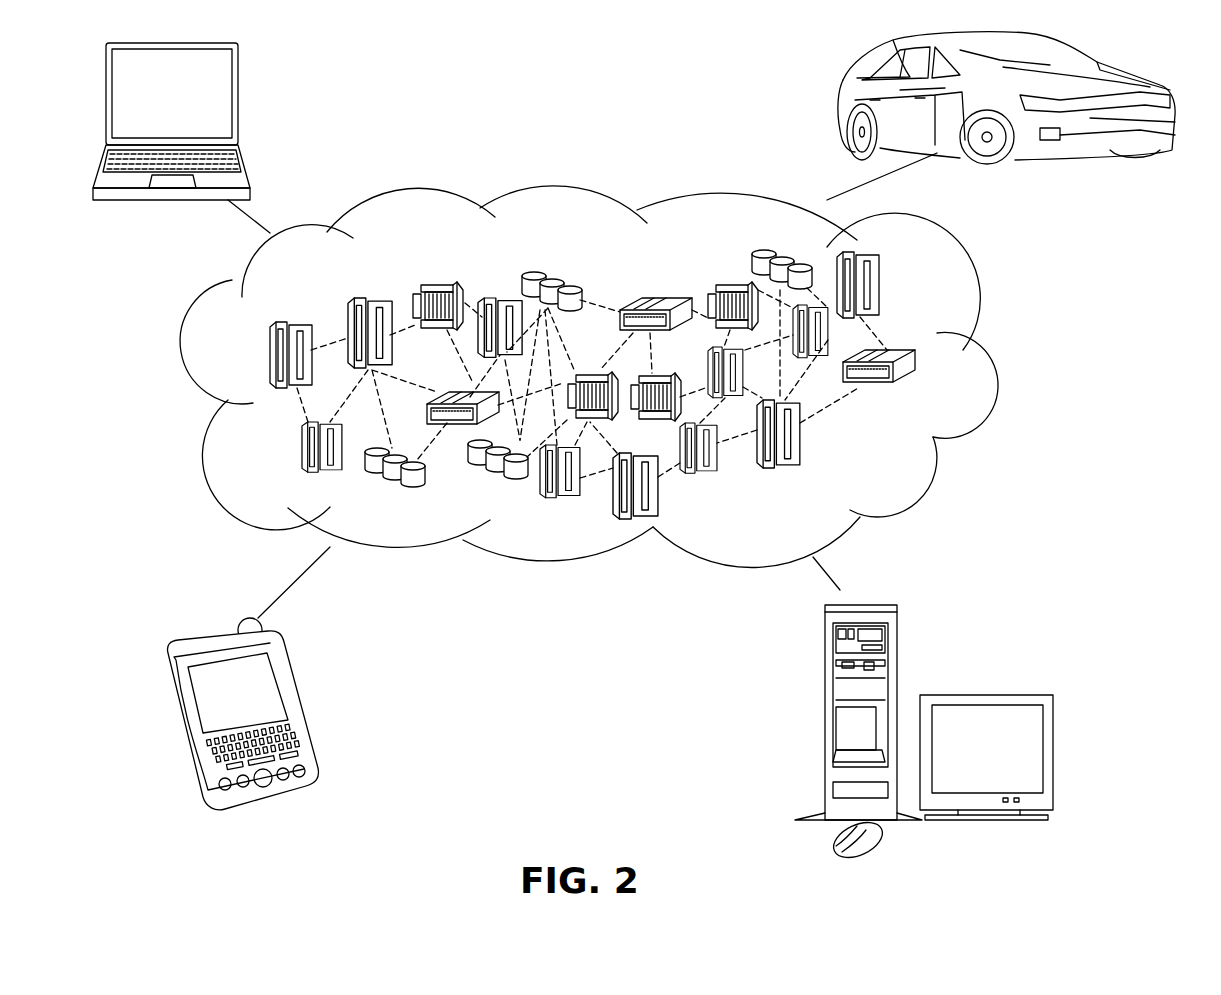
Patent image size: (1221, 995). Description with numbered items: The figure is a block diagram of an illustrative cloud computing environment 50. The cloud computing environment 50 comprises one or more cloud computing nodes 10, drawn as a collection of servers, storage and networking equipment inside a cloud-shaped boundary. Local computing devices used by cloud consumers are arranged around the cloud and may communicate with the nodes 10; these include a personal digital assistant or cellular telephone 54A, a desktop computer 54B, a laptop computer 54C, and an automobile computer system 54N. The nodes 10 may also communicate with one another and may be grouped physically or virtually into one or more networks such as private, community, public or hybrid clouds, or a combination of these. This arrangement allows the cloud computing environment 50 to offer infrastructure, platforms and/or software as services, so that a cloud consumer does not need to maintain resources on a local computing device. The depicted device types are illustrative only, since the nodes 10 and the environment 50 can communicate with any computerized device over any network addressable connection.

The cloud computing node 10 is at (895, 462).
The cloud computing environment 50 is at (986, 365).
The personal digital assistant (PDA) or cellular telephone 54A is at (292, 675).
The desktop computer 54B is at (823, 660).
The laptop computer 54C is at (238, 78).
The automobile computer system 54N is at (840, 95).